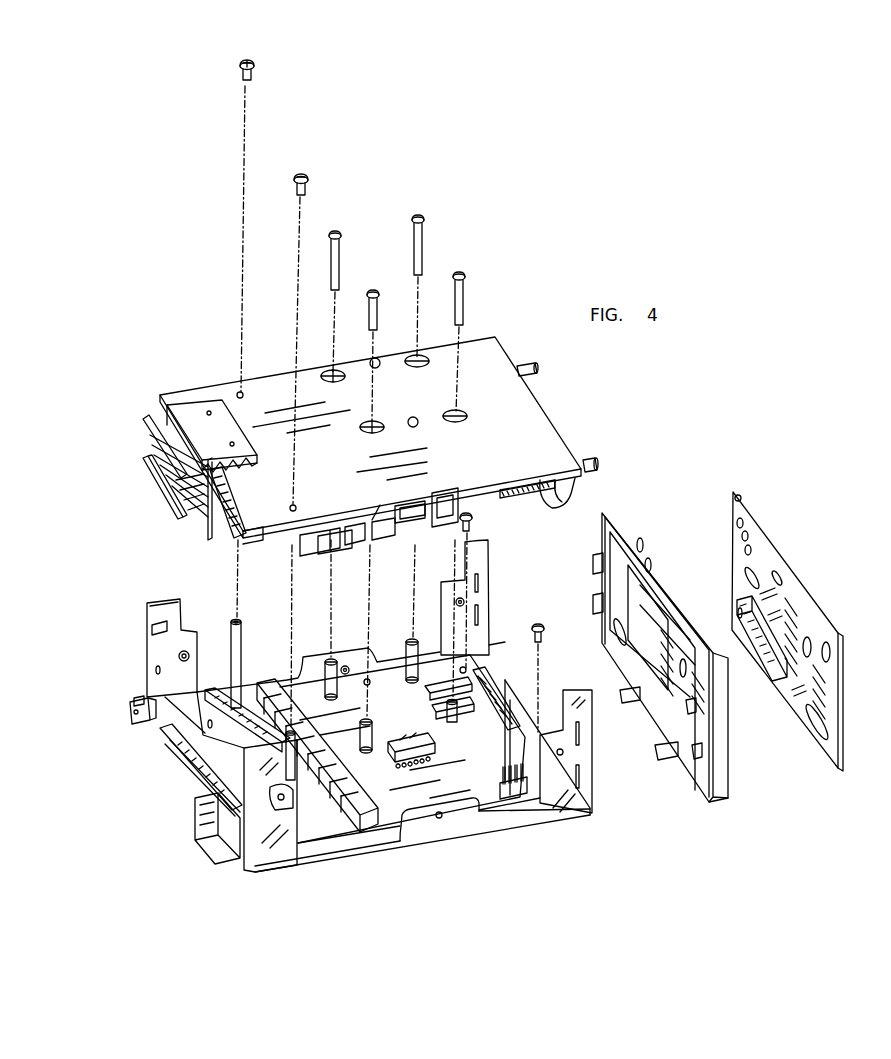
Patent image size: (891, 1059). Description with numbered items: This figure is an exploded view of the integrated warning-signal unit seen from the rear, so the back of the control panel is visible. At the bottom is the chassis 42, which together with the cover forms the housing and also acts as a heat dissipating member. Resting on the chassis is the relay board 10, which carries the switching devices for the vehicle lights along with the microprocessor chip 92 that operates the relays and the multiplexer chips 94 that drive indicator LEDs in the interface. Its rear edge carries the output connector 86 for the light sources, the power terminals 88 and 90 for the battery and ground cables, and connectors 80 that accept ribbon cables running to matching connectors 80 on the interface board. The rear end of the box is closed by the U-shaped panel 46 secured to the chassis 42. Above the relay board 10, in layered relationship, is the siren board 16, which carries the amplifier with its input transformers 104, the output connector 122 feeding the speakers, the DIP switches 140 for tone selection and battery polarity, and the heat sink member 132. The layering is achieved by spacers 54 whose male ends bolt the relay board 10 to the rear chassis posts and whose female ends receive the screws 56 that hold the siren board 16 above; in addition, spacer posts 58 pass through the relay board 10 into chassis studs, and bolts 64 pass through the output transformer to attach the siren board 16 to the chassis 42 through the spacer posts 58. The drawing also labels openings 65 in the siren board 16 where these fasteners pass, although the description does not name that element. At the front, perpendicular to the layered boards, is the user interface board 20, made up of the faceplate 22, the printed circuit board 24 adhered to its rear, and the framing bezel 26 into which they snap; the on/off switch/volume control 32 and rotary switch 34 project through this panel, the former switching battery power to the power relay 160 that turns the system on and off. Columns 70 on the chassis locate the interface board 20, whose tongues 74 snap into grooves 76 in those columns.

The relay board 10 is at (372, 830).
The siren board 16 is at (553, 413).
The user interface board 20 is at (745, 488).
The faceplate 22 is at (843, 760).
The printed circuit board 24 is at (818, 630).
The bezel 26 is at (727, 793).
The on/off switch/volume control 32 is at (535, 367).
The rotary switch 34 is at (594, 460).
The chassis 42 is at (458, 816).
The U-shaped panel 46 is at (152, 660).
The spacers 54 is at (232, 626).
The screws 56 is at (252, 62).
The spacer posts 58 is at (326, 660).
The bolts 64 is at (373, 295).
The hole 65 is at (374, 422).
The columns 70 is at (488, 552).
The tongues 74 is at (598, 605).
The grooves 76 is at (480, 612).
The connectors 80 is at (520, 790).
The output connector 86 is at (188, 765).
The power terminal 88 is at (208, 840).
The power terminal 90 is at (130, 704).
The microprocessor chip 92 is at (392, 760).
The multiplexer chips 94 is at (435, 705).
The input transformers 104 is at (332, 543).
The output connector 122 is at (235, 538).
The heat sink member 132 is at (192, 400).
The DIP switches 140 is at (403, 522).
The power relay 160 is at (662, 653).